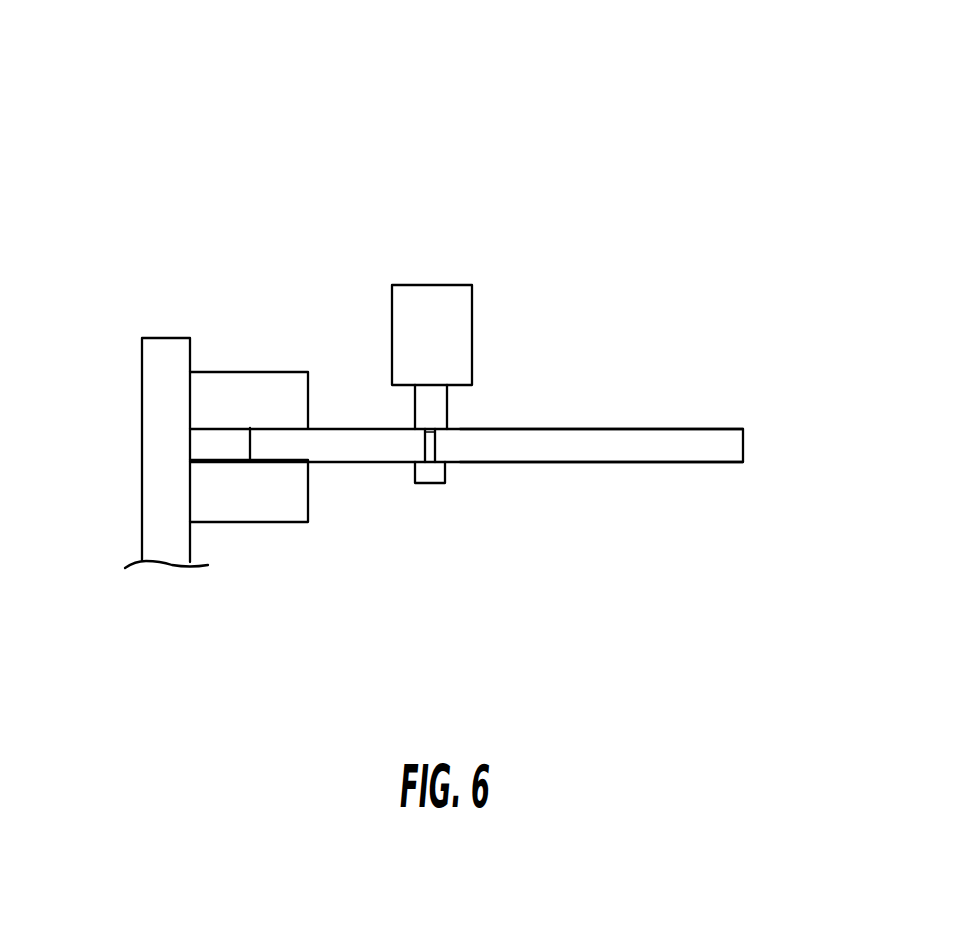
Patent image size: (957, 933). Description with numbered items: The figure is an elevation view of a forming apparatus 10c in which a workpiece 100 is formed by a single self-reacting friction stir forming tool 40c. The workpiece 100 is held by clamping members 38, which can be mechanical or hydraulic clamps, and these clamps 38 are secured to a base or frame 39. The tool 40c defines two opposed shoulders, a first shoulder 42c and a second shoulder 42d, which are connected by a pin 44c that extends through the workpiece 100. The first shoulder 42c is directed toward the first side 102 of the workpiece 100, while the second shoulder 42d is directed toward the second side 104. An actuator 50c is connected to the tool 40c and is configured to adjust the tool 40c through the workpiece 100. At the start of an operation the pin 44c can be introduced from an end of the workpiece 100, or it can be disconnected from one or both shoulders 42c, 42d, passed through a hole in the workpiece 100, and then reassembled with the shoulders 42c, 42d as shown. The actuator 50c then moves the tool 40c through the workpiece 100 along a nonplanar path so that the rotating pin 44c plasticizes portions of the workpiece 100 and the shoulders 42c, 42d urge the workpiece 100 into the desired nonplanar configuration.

The forming apparatus 10c is at (733, 128).
The clamping members 38 is at (237, 372).
The base or frame 39 is at (140, 425).
The self-reacting friction stir forming tool 40c is at (398, 413).
The first shoulder 42c is at (439, 432).
The second shoulder 42d is at (440, 448).
The pin 44c is at (425, 440).
The actuator 50c is at (472, 305).
The workpiece 100 is at (743, 445).
The first side 102 is at (657, 430).
The second side 104 is at (683, 463).